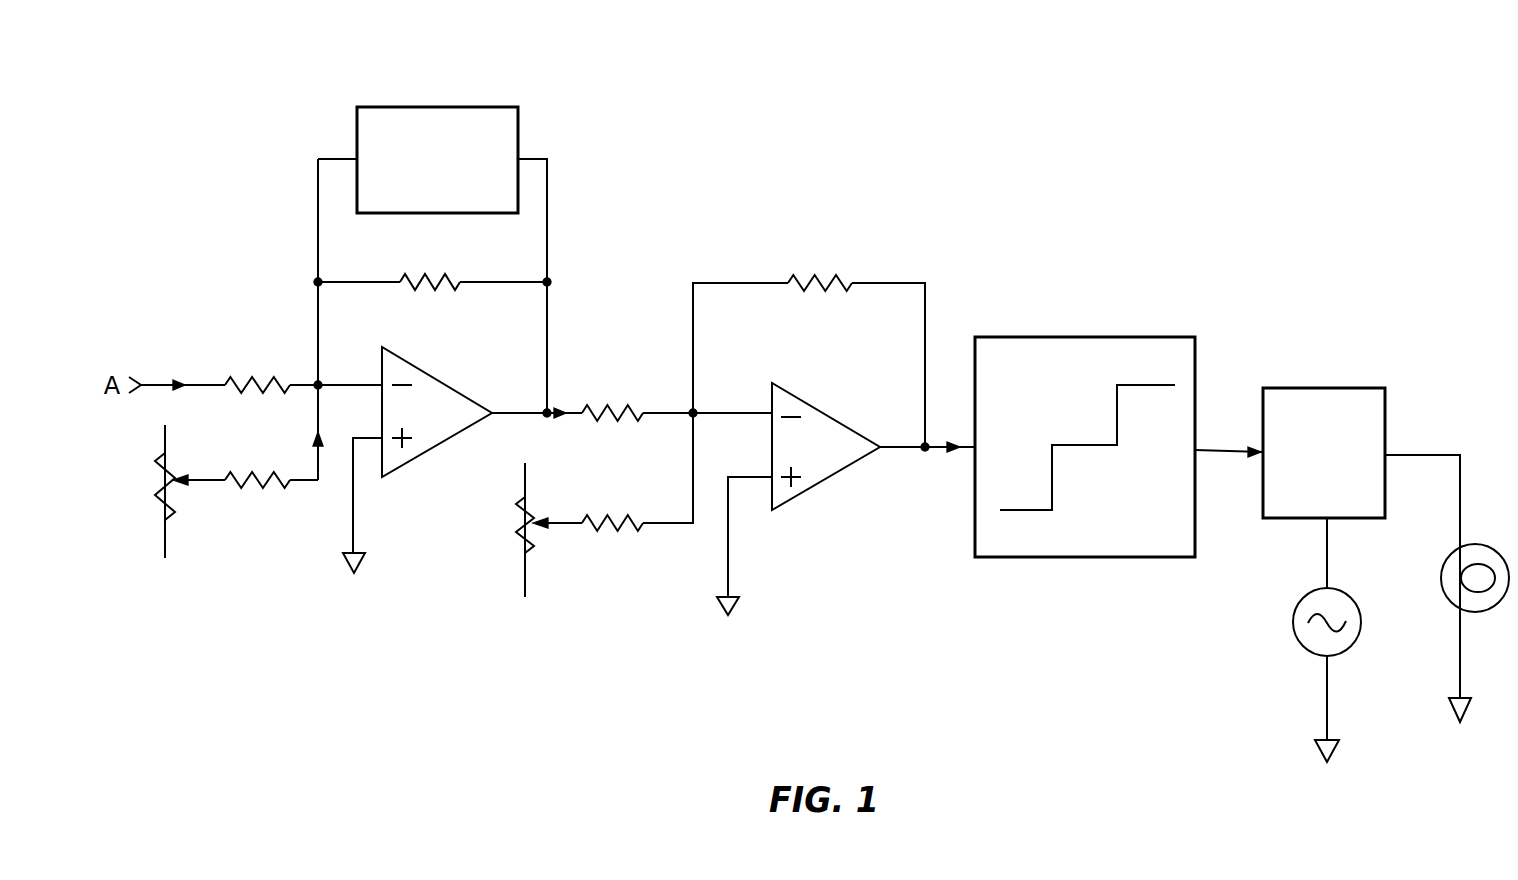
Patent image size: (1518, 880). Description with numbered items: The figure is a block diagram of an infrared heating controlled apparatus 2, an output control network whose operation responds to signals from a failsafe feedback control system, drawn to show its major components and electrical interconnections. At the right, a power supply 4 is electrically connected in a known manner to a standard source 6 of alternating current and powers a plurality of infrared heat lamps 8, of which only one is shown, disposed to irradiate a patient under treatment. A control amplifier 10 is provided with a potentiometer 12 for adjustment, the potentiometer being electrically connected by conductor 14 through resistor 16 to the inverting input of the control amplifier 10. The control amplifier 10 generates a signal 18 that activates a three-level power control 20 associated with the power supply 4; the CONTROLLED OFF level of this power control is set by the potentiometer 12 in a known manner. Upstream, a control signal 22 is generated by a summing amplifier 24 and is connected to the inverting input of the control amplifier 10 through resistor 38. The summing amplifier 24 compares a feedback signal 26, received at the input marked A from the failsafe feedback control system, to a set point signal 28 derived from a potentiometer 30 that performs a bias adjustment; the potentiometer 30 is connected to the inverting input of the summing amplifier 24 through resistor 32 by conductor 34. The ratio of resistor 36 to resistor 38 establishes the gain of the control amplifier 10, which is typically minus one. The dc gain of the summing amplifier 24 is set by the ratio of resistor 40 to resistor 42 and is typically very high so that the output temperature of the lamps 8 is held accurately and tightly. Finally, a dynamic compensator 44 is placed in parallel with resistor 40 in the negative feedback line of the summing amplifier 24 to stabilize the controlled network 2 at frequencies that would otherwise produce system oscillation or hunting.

The infrared heating controlled apparatus 2 is at (1025, 170).
The power supply 4 is at (1305, 387).
The source of alternating current 6 is at (1293, 625).
The infrared heat lamps 8 is at (1483, 544).
The control amplifier 10 is at (836, 478).
The potentiometer 12 is at (522, 527).
The conductor 14 is at (672, 526).
The resistor 16 is at (605, 514).
The signal 18 is at (950, 444).
The three-level power control 20 is at (1068, 336).
The control signal 22 is at (566, 409).
The summing amplifier 24 is at (452, 385).
The feedback signal 26 is at (186, 380).
The set point signal 28 is at (315, 440).
The potentiometer 30 is at (170, 483).
The resistor 32 is at (258, 470).
The conductor 34 is at (302, 484).
The resistor 36 is at (818, 282).
The resistor 38 is at (608, 408).
The resistor 40 is at (424, 280).
The resistor 42 is at (252, 377).
The dynamic compensator 44 is at (459, 107).